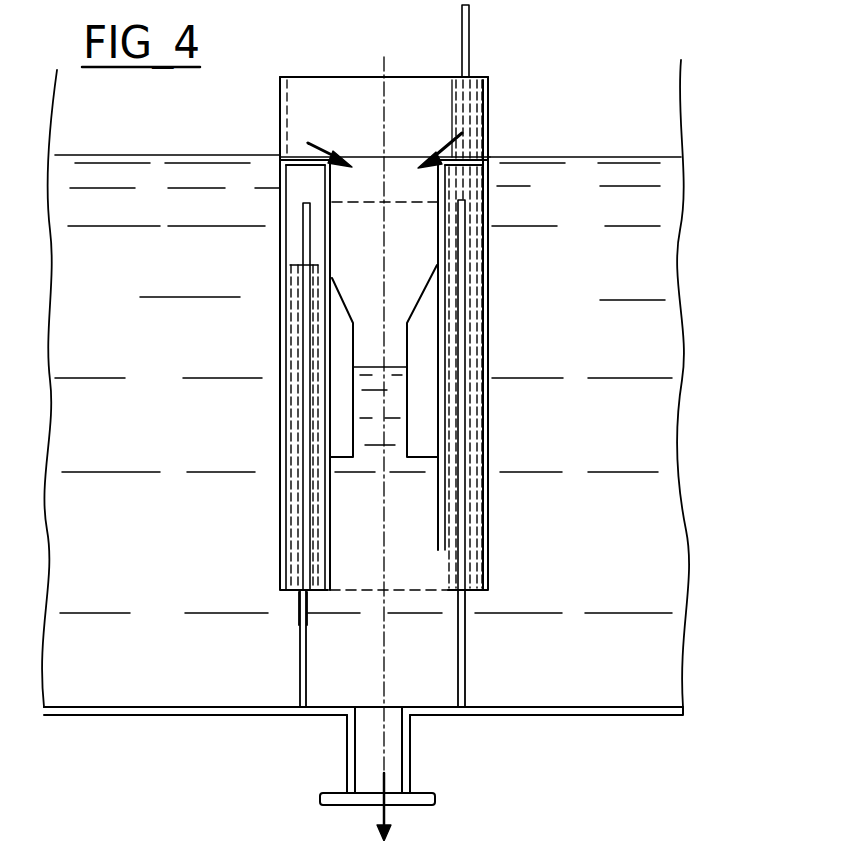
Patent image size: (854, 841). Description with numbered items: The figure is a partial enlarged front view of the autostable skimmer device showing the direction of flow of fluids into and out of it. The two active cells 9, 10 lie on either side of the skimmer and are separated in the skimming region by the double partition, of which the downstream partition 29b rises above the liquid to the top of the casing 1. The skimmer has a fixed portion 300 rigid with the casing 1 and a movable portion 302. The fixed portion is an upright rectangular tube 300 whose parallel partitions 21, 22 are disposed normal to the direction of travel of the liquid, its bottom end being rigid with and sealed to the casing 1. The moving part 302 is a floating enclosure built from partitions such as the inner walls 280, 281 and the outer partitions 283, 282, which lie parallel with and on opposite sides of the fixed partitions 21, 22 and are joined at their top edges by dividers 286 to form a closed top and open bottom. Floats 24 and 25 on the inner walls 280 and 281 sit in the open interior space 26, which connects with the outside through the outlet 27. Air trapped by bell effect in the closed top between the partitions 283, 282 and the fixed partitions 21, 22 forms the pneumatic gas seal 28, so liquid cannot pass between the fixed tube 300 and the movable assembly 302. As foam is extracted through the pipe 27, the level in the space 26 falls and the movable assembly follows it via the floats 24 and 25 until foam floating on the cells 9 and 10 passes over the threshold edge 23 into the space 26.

The casing 1 is at (628, 706).
The active cell 9 is at (177, 363).
The active cell 10 is at (620, 359).
The partition 21 is at (298, 645).
The partition 22 is at (467, 656).
The threshold edge 23 is at (487, 160).
The float 24 is at (338, 403).
The float 25 is at (420, 403).
The interior space 26 is at (418, 548).
The outlet 27 is at (388, 756).
The gas seal 28 is at (318, 182).
The downstream partition 29b is at (469, 22).
The inner partition 280 is at (356, 247).
The inner partition 281 is at (436, 222).
The outer partition 282 is at (490, 262).
The outer partition 283 is at (280, 272).
The divider 286 is at (296, 170).
The fixed rectangular tube 300 is at (288, 608).
The movable portion 302 is at (272, 522).